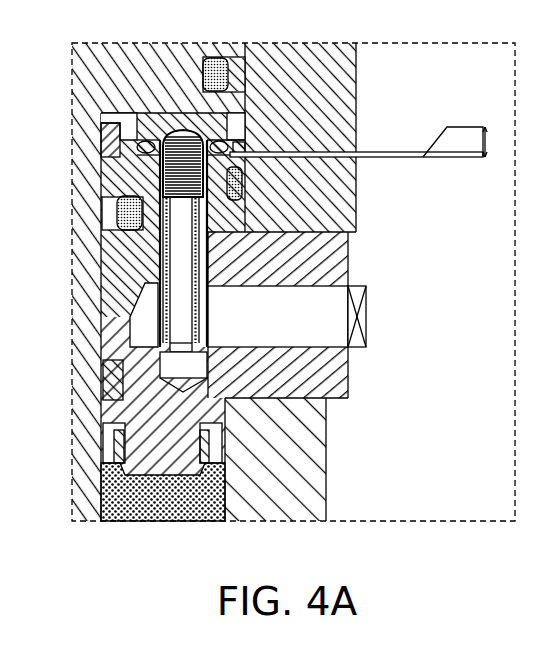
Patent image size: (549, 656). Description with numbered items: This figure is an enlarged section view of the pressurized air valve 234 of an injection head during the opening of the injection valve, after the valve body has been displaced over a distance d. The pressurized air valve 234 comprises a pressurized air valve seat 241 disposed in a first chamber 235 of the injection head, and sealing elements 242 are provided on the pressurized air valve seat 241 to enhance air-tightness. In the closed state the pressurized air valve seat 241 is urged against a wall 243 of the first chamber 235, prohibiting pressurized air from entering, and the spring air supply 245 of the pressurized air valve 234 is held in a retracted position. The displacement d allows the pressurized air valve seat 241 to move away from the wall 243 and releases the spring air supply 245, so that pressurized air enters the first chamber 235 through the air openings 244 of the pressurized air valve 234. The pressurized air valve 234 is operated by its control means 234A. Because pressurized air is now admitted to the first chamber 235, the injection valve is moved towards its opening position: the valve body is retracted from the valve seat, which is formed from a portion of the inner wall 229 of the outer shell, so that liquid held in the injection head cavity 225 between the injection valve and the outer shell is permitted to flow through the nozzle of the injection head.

The pressurized air valve seat 241 is at (148, 130).
The sealing elements 242 is at (237, 150).
The first chamber 235 is at (108, 118).
The wall 243 is at (137, 147).
The spring air supply 245 is at (152, 192).
The air openings 244 is at (243, 155).
The pressurized air valve 234 is at (334, 301).
The control means 234A is at (362, 312).
The injection head cavity 225 is at (153, 513).
The inner wall 229 is at (227, 512).